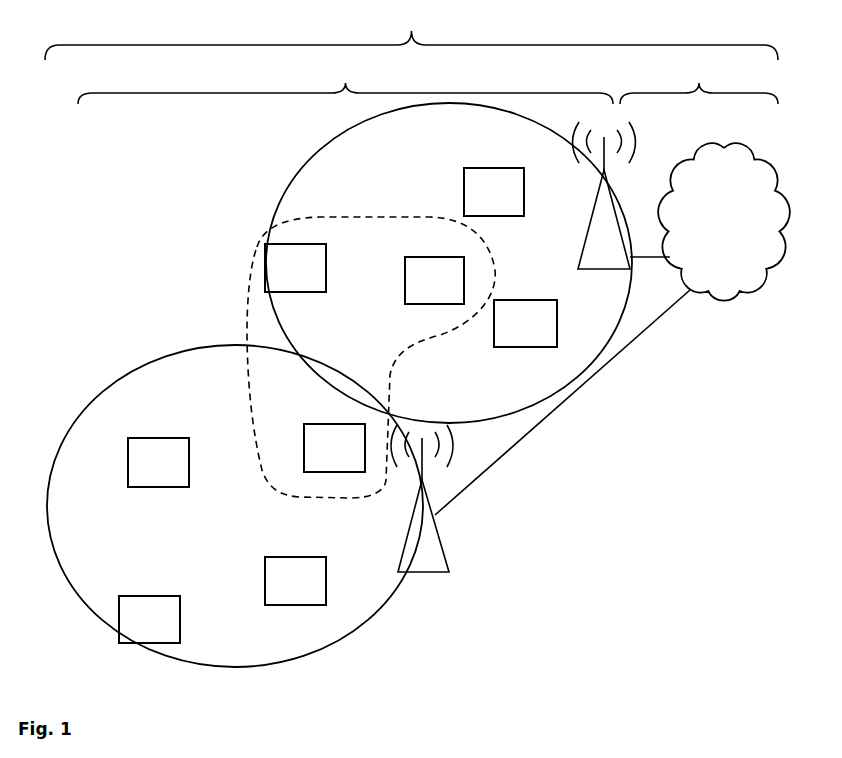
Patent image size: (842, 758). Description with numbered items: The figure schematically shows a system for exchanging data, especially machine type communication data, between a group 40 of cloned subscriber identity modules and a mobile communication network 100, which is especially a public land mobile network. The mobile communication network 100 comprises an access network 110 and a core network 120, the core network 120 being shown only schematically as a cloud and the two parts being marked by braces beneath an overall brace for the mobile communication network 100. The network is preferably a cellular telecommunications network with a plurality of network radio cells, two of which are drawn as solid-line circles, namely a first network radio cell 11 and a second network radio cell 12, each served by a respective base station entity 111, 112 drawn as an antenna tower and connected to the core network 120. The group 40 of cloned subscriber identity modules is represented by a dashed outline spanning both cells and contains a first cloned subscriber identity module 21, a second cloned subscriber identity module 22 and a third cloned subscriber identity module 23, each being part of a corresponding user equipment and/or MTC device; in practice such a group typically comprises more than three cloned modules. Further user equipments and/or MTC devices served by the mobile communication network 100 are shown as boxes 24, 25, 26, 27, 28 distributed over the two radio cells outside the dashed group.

The mobile communication network 100 is at (411, 33).
The access network 110 is at (345, 80).
The core network 120 is at (699, 80).
The network radio cell 11 is at (290, 183).
The network radio cell 12 is at (222, 667).
The group of cloned subscriber identity modules 40 is at (247, 282).
The first cloned subscriber identity module 21 is at (295, 268).
The second cloned subscriber identity module 22 is at (434, 280).
The third cloned subscriber identity module 23 is at (334, 448).
The user equipment and/or MTC device 24 is at (525, 323).
The user equipment and/or MTC device 25 is at (158, 462).
The user equipment and/or MTC device 26 is at (494, 192).
The user equipment and/or MTC device 27 is at (149, 619).
The user equipment and/or MTC device 28 is at (295, 581).
The base station entity 111 is at (604, 196).
The base station entity 112 is at (422, 498).